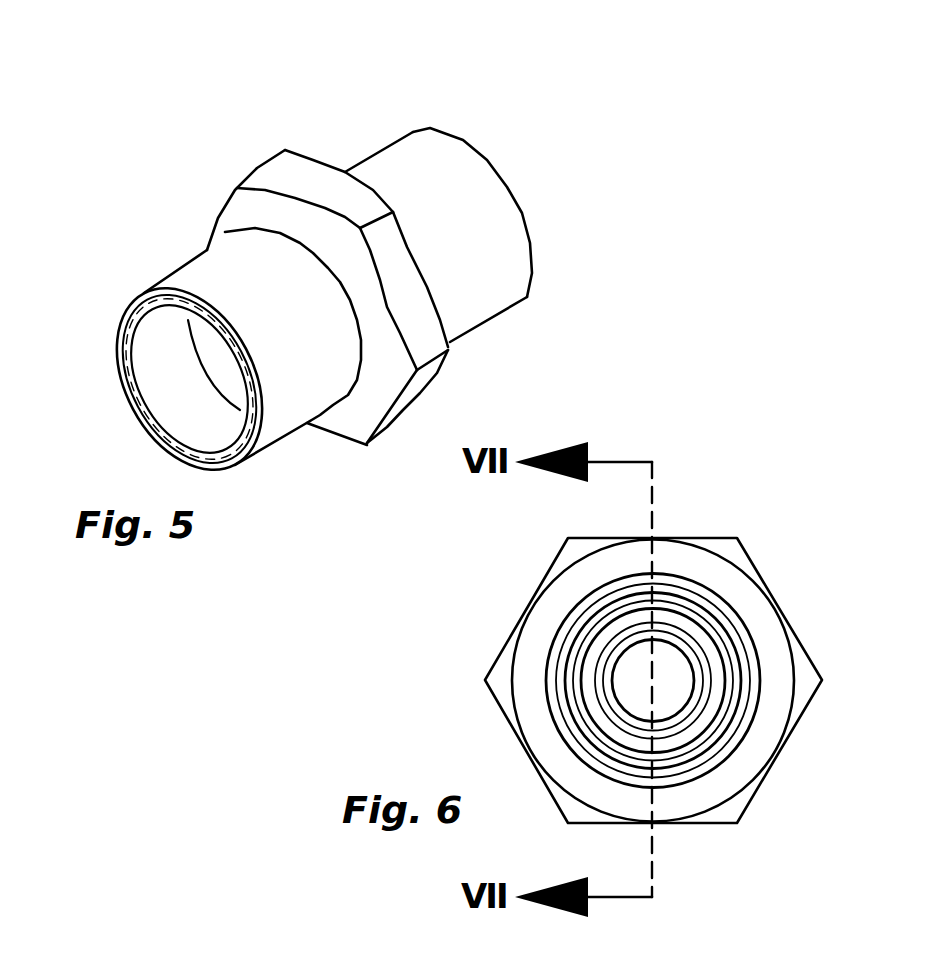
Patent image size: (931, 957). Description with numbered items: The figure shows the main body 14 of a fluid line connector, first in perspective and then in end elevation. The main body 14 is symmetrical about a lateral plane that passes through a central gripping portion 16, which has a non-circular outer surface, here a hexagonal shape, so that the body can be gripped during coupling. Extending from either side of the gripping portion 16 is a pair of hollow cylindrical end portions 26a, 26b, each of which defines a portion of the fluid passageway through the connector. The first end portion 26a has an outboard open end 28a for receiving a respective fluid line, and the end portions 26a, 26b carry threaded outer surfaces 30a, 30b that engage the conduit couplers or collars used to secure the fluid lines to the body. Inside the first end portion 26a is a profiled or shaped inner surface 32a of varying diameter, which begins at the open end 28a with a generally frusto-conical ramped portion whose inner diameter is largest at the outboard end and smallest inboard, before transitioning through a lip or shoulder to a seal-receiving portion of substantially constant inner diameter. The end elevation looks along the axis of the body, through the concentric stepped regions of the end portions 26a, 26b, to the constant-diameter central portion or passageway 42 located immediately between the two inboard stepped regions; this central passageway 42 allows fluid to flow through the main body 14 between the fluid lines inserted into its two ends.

In FIG. 5, the main body 14 is at (138, 95).
In FIG. 5, the central gripping portion 16 is at (297, 168).
In FIG. 6, the central gripping portion 16 is at (714, 532).
In FIG. 5, the hollow cylindrical end portion 26a is at (170, 278).
In FIG. 6, the hollow cylindrical end portion 26a is at (562, 612).
In FIG. 5, the hollow cylindrical end portion 26b is at (413, 142).
In FIG. 5, the outboard open end 28a is at (160, 397).
In FIG. 5, the threaded outer surface 30a is at (290, 395).
In FIG. 6, the threaded outer surface 30a is at (536, 704).
In FIG. 5, the threaded outer surface 30b is at (496, 285).
In FIG. 5, the profiled inner surface 32a is at (147, 357).
In FIG. 6, the central passageway 42 is at (690, 672).